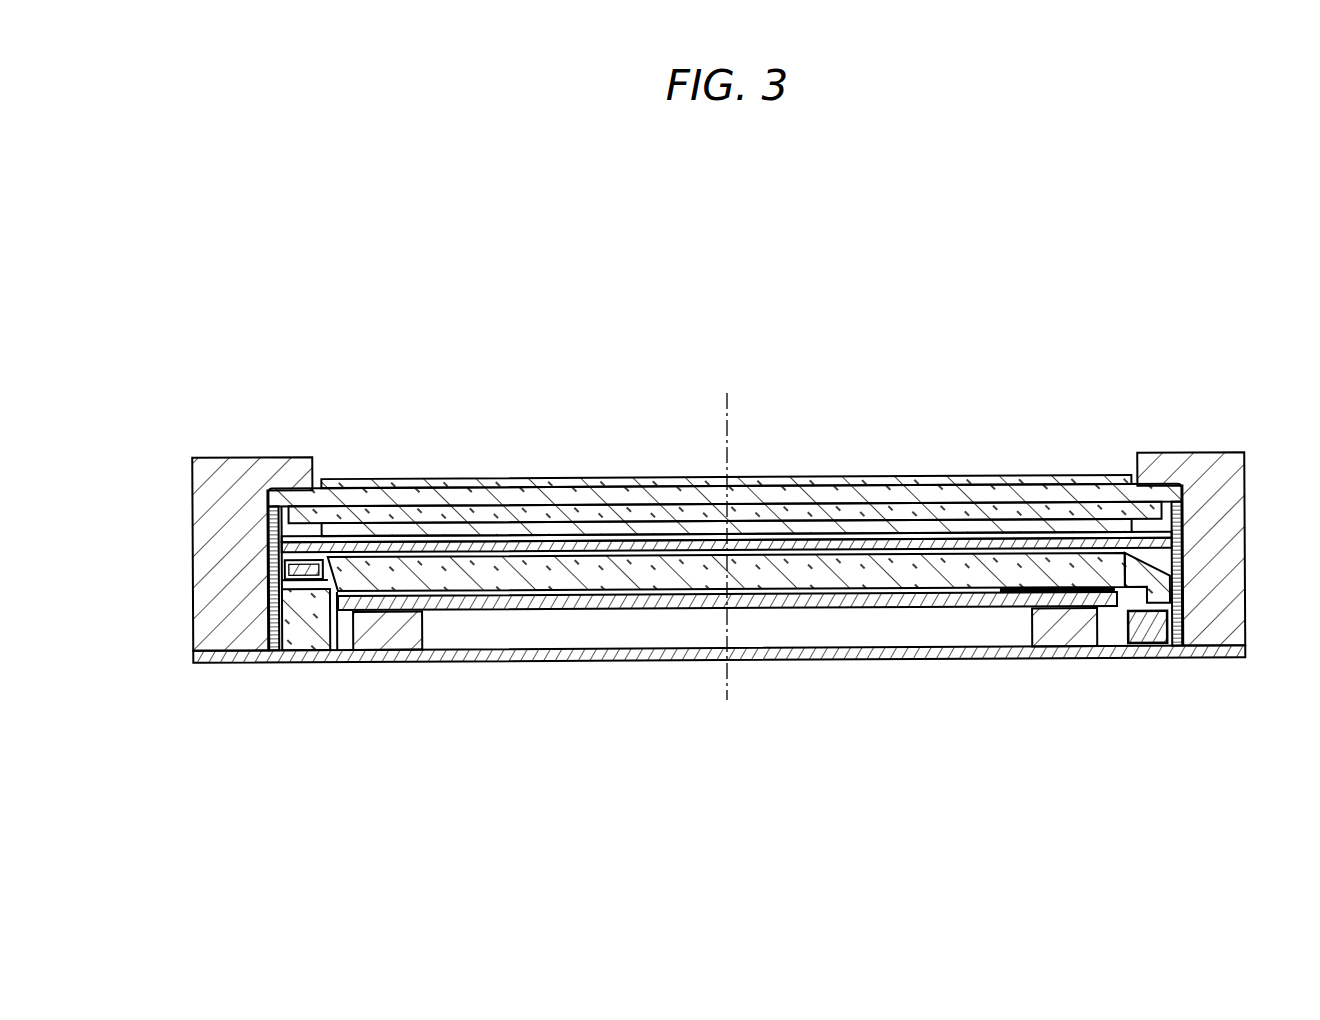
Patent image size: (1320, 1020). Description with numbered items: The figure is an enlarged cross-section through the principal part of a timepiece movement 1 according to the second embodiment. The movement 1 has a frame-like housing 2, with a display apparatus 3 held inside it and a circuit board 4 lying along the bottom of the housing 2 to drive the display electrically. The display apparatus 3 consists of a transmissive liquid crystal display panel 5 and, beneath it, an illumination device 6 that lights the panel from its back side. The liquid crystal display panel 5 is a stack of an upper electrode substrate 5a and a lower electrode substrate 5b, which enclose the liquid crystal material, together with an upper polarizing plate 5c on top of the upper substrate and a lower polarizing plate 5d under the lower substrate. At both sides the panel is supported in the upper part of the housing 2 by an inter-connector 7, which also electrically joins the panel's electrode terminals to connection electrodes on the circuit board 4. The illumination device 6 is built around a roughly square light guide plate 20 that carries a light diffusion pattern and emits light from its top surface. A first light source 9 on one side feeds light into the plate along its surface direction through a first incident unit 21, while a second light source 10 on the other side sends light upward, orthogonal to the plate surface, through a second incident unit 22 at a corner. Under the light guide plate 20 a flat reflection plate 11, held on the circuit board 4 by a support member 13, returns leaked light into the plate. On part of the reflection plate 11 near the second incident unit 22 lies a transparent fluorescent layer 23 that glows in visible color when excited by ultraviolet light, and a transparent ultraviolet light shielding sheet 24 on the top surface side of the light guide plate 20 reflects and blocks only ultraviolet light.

The movement 1 is at (209, 423).
The housing 2 is at (237, 527).
The display apparatus 3 is at (455, 295).
The circuit board 4 is at (762, 661).
The liquid crystal display panel 5 is at (521, 498).
The upper electrode substrate 5a is at (942, 492).
The lower electrode substrate 5b is at (987, 504).
The upper polarizing plate 5c is at (890, 482).
The lower polarizing plate 5d is at (1033, 522).
The illumination device 6 is at (632, 532).
The inter-connector 7 is at (268, 600).
The first light source 9 is at (313, 568).
The second light source 10 is at (1150, 593).
The reflection plate 11 is at (587, 604).
The support member 13 is at (392, 632).
The light guide plate 20 is at (678, 572).
The first incident unit 21 is at (342, 568).
The second incident unit 22 is at (1148, 625).
The transparent fluorescent layer 23 is at (1013, 600).
The transparent ultraviolet light shielding sheet 24 is at (820, 543).